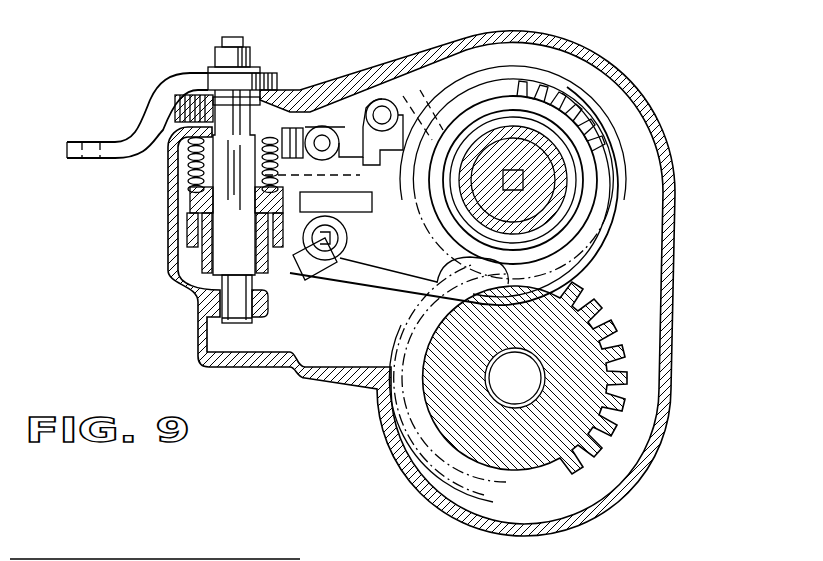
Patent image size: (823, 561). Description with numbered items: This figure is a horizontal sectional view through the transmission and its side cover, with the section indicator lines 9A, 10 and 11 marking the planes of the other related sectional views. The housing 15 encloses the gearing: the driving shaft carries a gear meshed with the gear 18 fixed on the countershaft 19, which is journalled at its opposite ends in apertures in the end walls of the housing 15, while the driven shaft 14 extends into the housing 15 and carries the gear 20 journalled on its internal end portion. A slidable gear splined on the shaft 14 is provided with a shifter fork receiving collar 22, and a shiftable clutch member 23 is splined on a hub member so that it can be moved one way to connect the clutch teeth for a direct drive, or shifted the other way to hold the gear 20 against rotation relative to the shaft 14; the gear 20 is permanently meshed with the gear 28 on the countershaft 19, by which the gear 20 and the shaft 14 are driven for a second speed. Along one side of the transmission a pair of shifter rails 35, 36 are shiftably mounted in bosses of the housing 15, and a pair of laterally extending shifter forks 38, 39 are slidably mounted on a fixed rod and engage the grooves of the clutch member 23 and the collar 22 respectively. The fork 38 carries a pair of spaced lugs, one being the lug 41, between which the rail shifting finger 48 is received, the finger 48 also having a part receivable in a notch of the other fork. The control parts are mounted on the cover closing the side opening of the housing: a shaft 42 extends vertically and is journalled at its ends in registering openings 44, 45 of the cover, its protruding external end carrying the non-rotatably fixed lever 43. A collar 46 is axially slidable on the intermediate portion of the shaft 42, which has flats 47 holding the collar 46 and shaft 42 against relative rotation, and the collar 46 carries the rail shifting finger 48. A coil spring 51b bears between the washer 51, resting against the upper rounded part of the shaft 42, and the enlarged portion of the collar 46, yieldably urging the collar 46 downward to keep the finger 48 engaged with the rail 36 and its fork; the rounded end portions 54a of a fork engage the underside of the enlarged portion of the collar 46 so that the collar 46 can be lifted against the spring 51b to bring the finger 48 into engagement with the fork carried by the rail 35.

The section line 10 is at (100, 160).
The section line 11 is at (291, 352).
The section line 9A is at (516, 548).
The driven shaft 14 is at (513, 180).
The housing 15 is at (605, 65).
The gear 18 is at (632, 392).
The countershaft 19 is at (515, 378).
The gear 20 is at (596, 152).
The shifter fork receiving collar 22 is at (595, 177).
The shiftable clutch member 23 is at (594, 121).
The gear 28 is at (622, 350).
The shifter rail 35 is at (343, 78).
The shifter rail 36 is at (318, 268).
The shifter fork 38 is at (410, 292).
The shifter fork 39 is at (410, 243).
The lug 41 is at (336, 202).
The shaft 42 is at (225, 303).
The lever 43 is at (146, 100).
The opening 44 is at (210, 122).
The opening 45 is at (262, 312).
The collar 46 is at (195, 200).
The flats 47 is at (225, 248).
The rail shifting finger 48 is at (394, 176).
The washer 51 is at (198, 133).
The coil spring 51b is at (190, 168).
The rounded end portions 54a is at (192, 233).